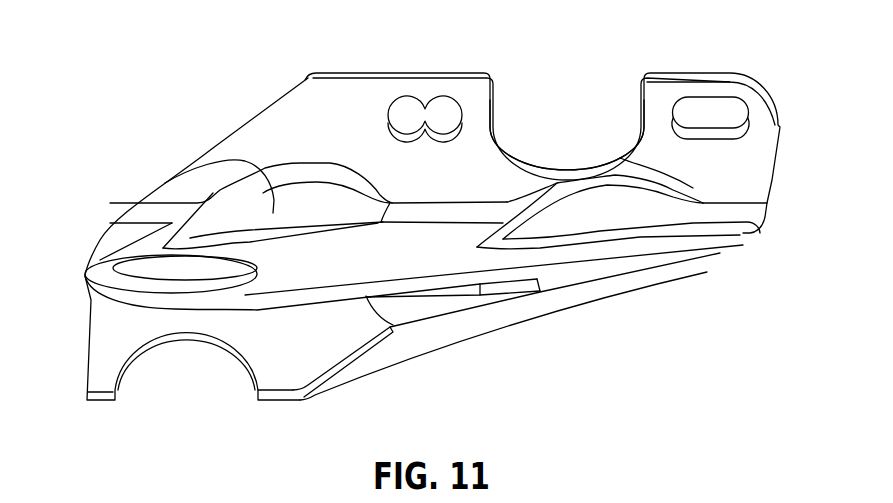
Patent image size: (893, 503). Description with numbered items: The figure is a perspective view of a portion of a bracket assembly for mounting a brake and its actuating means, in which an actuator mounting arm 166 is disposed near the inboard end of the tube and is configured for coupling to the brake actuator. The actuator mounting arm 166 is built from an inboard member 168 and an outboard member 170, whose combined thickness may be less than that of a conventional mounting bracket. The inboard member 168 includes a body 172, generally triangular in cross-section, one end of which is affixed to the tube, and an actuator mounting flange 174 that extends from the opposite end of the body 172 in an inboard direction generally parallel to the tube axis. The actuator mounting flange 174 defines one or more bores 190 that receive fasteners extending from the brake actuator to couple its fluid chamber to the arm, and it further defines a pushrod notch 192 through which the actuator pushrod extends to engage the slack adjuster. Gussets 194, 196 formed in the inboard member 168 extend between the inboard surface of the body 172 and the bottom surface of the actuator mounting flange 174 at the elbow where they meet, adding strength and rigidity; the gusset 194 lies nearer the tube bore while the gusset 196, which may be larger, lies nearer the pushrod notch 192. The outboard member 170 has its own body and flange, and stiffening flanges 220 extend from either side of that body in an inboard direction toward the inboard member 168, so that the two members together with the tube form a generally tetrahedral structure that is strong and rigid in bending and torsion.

The actuator mounting arm 166 is at (170, 82).
The inboard member 168 is at (302, 122).
The outboard member 170 is at (120, 338).
The body 172 is at (642, 255).
The actuator mounting flange 174 is at (780, 127).
The bores 190 is at (441, 113).
The pushrod notch 192 is at (568, 130).
The gusset 194 is at (165, 183).
The gusset 196 is at (605, 205).
The stiffening flanges 220 is at (475, 318).